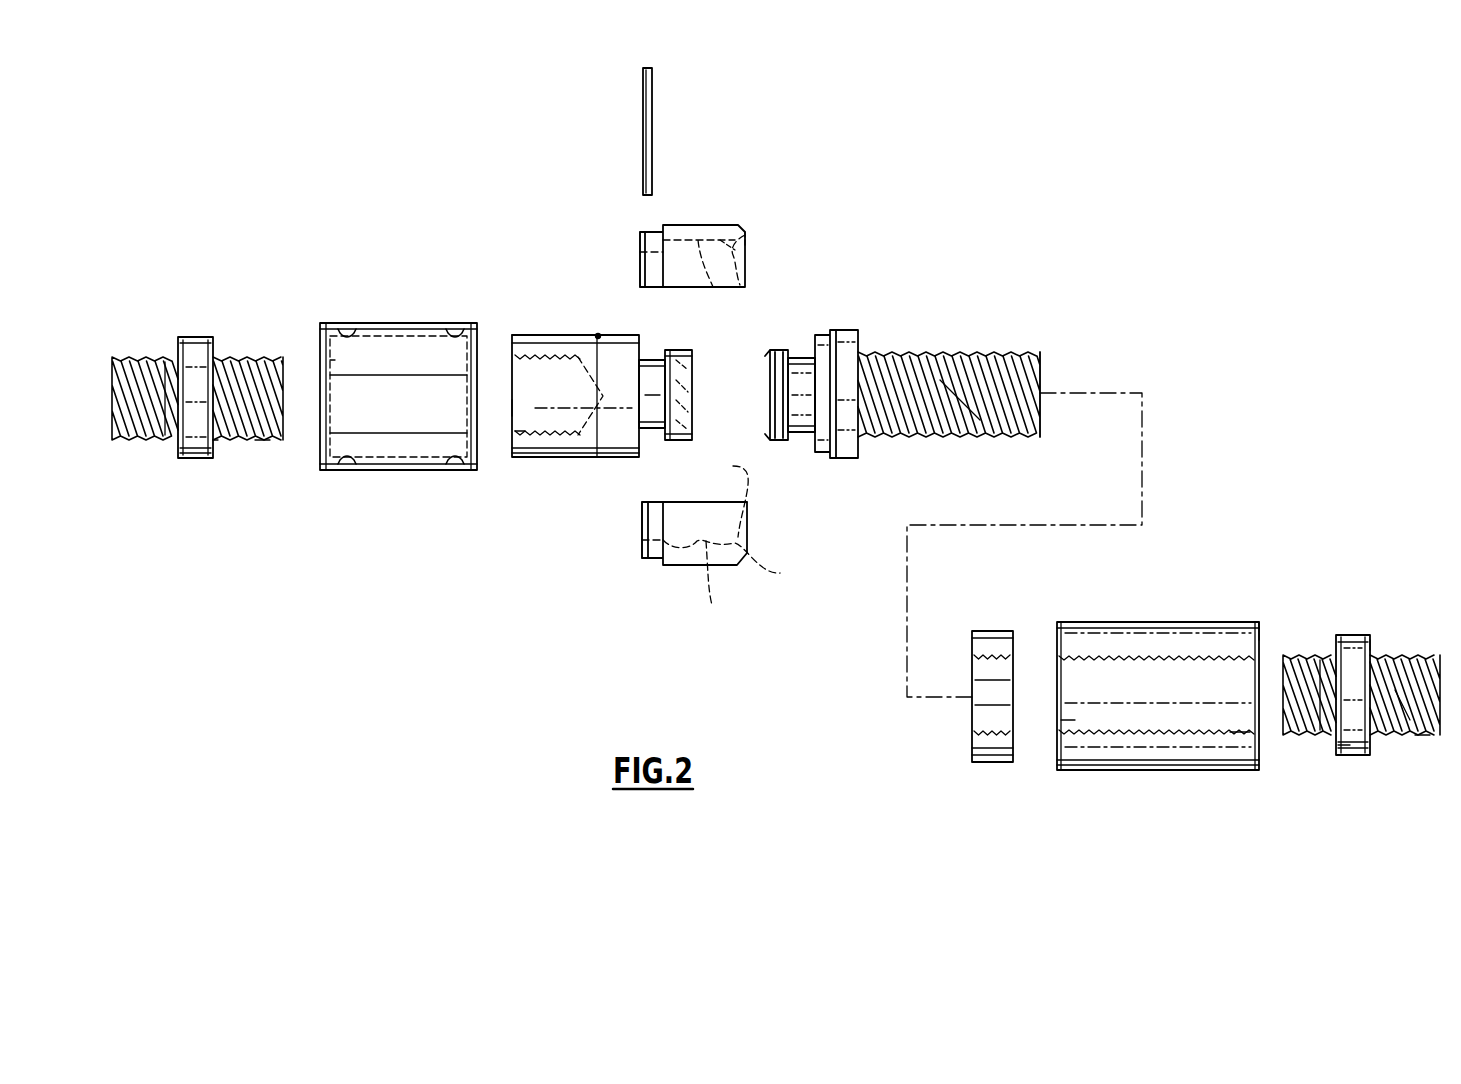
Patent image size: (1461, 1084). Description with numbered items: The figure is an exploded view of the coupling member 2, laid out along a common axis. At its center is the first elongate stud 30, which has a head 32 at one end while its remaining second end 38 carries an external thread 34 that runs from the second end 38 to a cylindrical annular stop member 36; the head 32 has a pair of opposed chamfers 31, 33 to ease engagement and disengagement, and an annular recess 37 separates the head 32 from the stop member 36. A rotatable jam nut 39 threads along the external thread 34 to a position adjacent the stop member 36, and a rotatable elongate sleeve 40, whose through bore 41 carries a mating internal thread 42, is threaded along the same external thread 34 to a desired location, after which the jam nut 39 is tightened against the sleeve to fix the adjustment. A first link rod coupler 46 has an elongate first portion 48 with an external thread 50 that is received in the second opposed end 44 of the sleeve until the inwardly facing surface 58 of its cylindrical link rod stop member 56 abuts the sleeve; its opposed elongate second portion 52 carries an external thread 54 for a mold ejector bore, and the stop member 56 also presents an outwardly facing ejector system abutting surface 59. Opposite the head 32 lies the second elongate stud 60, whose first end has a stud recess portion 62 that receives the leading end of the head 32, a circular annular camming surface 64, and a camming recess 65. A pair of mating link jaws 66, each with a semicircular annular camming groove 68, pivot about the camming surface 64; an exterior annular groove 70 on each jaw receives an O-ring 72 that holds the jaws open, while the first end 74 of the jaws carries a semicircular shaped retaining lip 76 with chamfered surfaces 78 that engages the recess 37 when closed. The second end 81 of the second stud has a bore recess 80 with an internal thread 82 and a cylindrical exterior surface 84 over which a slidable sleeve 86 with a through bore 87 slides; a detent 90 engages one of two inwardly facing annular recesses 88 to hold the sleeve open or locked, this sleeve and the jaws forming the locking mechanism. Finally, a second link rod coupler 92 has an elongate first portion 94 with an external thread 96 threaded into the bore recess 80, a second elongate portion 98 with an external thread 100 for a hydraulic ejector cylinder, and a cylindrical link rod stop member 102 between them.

The coupling member 2 is at (392, 188).
The first elongate stud 30 is at (958, 413).
The chamfer 31 is at (787, 438).
The head 32 is at (775, 441).
The chamfer 33 is at (803, 396).
The external thread 34 is at (895, 352).
The cylindrical annular stop member 36 is at (846, 330).
The annular recess 37 is at (805, 357).
The second end 38 is at (1040, 372).
The rotatable jam nut 39 is at (997, 630).
The rotatable elongate sleeve 40 is at (1078, 622).
The through bore 41 is at (1063, 720).
The mating internal thread 42 is at (1238, 722).
The second opposed end 44 is at (1262, 636).
The first link rod coupler 46 is at (1366, 762).
The elongate first portion 48 is at (1330, 655).
The external thread 50 is at (1297, 655).
The elongate second portion 52 is at (1400, 735).
The external thread 54 is at (1424, 736).
The cylindrical link rod stop member 56 is at (1355, 756).
The inwardly facing surface 58 is at (1336, 748).
The ejector system abutting surface 59 is at (1372, 643).
The second elongate stud 60 is at (580, 458).
The stud recess portion 62 is at (690, 414).
The circular annular camming surface 64 is at (681, 350).
The camming recess 65 is at (654, 434).
The mating link jaws 66 is at (716, 225).
The semicircular annular camming groove 68 is at (713, 288).
The exterior annular groove 70 is at (662, 232).
The O-ring 72 is at (653, 108).
The first end 74 is at (748, 515).
The semicircular shaped retaining lip 76 is at (748, 280).
The chamfered surfaces 78 is at (748, 250).
The bore recess 80 is at (520, 410).
The second end 81 is at (532, 334).
The internal thread 82 is at (520, 434).
The exterior surface 84 is at (514, 334).
The slidable sleeve 86 is at (400, 322).
The through bore 87 is at (343, 360).
The inwardly facing annular recesses 88 is at (347, 324).
The detent 90 is at (599, 334).
The second link rod coupler 92 is at (179, 466).
The elongate first portion 94 is at (216, 445).
The external thread 96 is at (262, 442).
The second elongate portion 98 is at (158, 370).
The external thread 100 is at (157, 368).
The cylindrical link rod stop member 102 is at (200, 337).